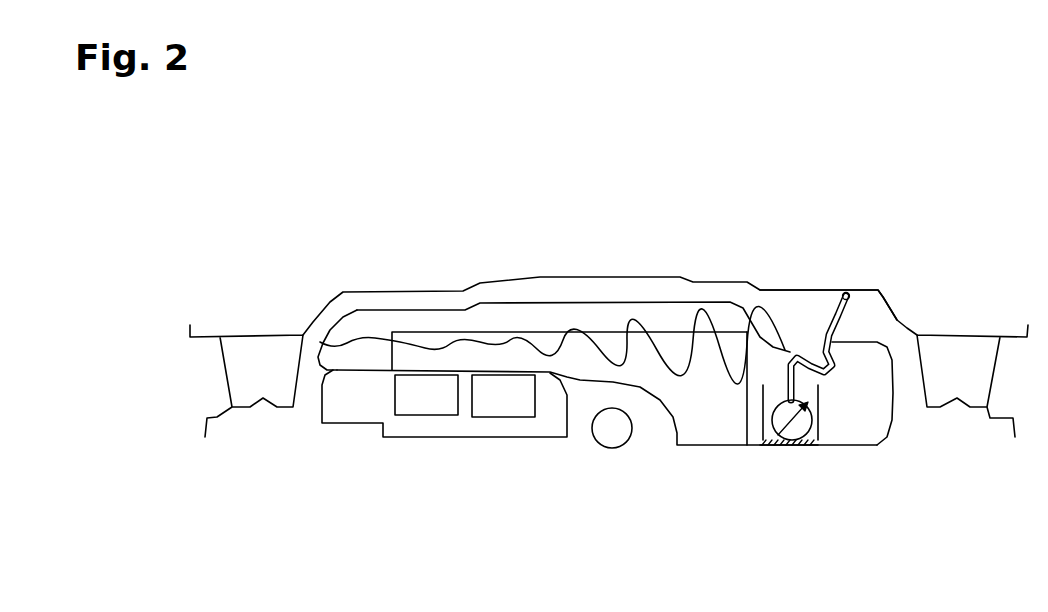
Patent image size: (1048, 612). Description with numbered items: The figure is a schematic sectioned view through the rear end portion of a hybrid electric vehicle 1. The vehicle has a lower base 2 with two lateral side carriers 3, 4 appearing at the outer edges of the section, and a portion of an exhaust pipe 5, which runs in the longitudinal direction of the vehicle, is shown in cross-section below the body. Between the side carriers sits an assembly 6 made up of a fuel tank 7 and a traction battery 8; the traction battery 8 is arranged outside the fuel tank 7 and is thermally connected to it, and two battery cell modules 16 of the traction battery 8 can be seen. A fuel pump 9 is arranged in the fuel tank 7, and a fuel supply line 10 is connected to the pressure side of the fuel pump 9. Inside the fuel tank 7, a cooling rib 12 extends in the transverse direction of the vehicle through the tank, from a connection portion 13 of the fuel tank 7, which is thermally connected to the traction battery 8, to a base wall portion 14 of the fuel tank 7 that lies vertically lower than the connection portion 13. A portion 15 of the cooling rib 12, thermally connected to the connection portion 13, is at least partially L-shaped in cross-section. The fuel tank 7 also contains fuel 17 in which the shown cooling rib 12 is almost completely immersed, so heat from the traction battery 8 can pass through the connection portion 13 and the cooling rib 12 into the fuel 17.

The hybrid electric vehicle 1 is at (625, 234).
The lower base 2 is at (752, 288).
The lateral side carrier 3 is at (253, 373).
The lateral side carrier 4 is at (968, 375).
The exhaust pipe 5 is at (612, 448).
The assembly 6 is at (780, 312).
The fuel tank 7 is at (862, 444).
The traction battery 8 is at (348, 408).
The fuel pump 9 is at (800, 425).
The fuel supply line 10 is at (838, 313).
The cooling rib 12 is at (548, 333).
The connection portion 13 is at (380, 370).
The base wall portion 14 is at (752, 445).
The portion of the cooling rib 15 is at (433, 337).
The battery cell module 16 is at (420, 408).
The fuel 17 is at (878, 410).